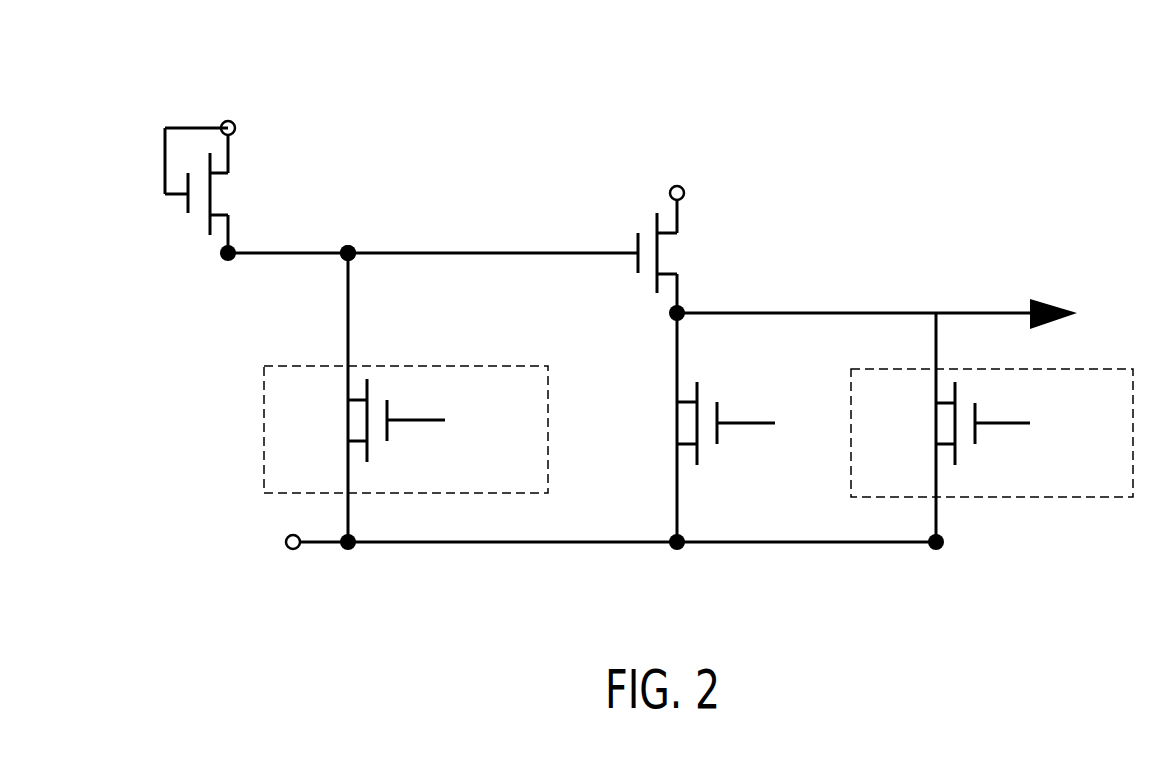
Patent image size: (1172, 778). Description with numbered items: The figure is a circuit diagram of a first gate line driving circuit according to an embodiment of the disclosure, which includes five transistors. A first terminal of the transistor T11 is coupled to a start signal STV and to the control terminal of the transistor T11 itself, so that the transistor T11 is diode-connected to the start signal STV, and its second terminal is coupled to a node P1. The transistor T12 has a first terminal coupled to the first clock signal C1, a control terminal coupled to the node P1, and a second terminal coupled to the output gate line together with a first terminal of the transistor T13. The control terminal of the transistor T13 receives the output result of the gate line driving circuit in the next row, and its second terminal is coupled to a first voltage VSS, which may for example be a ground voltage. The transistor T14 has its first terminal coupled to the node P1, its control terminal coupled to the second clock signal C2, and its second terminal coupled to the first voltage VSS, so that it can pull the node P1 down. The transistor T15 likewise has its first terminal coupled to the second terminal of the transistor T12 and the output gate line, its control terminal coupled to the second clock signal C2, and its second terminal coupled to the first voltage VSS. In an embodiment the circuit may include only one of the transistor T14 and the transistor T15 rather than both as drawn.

The start signal STV is at (228, 121).
The transistor T11 is at (210, 194).
The node P1 is at (347, 247).
The first clock signal C1 is at (677, 186).
The transistor T12 is at (657, 253).
The transistor T14 is at (367, 420).
The second clock signal C2 is at (730, 422).
The transistor T13 is at (697, 422).
The transistor T15 is at (955, 423).
The first voltage VSS is at (286, 542).